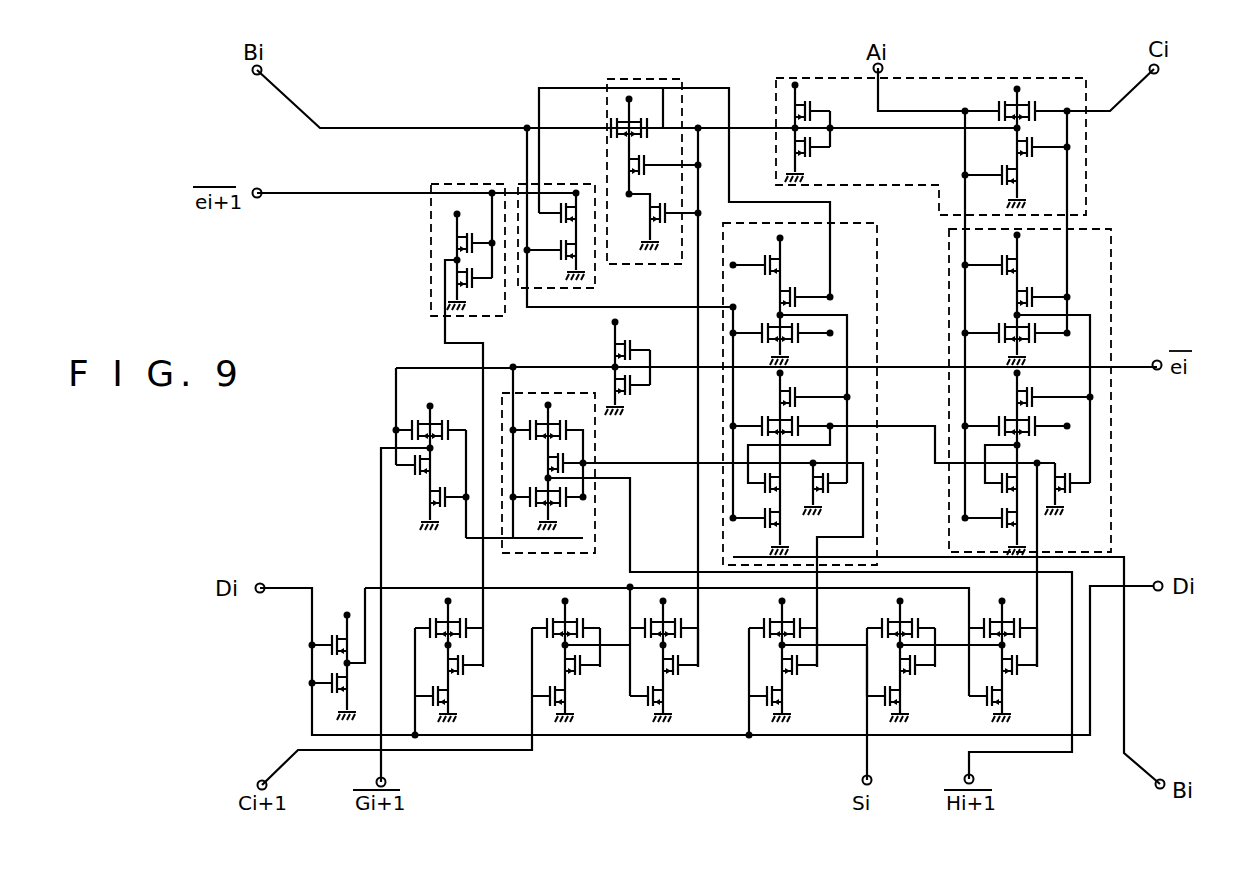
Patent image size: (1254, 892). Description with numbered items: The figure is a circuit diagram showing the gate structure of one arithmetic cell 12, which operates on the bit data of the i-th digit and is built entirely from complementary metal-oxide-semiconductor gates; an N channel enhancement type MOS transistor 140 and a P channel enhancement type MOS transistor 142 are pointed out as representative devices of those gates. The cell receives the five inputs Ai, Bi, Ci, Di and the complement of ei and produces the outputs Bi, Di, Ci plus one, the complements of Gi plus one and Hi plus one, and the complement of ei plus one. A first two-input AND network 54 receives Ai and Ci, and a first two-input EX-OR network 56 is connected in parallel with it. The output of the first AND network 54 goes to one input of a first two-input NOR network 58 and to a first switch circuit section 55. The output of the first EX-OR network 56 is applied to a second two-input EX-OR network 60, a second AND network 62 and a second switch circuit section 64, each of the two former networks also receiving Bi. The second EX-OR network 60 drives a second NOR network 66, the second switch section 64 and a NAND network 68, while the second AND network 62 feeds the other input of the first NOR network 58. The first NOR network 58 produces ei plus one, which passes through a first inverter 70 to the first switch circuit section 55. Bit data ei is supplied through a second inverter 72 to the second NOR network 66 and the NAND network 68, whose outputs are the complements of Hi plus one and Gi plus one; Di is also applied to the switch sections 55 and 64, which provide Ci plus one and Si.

The arithmetic cell 12 is at (1143, 497).
The first 2-input AND network 54 is at (1086, 188).
The first switch circuit section 55 is at (604, 705).
The first 2-input EX-OR network 56 is at (1111, 298).
The first 2-input NOR network 58 is at (651, 79).
The second 2-input EX-OR network 60 is at (877, 345).
The second AND network 62 is at (553, 184).
The second switch circuit section 64 is at (850, 705).
The second NOR network 66 is at (595, 538).
The NAND network 68 is at (398, 412).
The first inverter 70 is at (431, 292).
The second inverter 72 is at (636, 395).
The N channel enhancement type MOS transistor 140 is at (324, 690).
The P channel enhancement type MOS transistor 142 is at (345, 632).